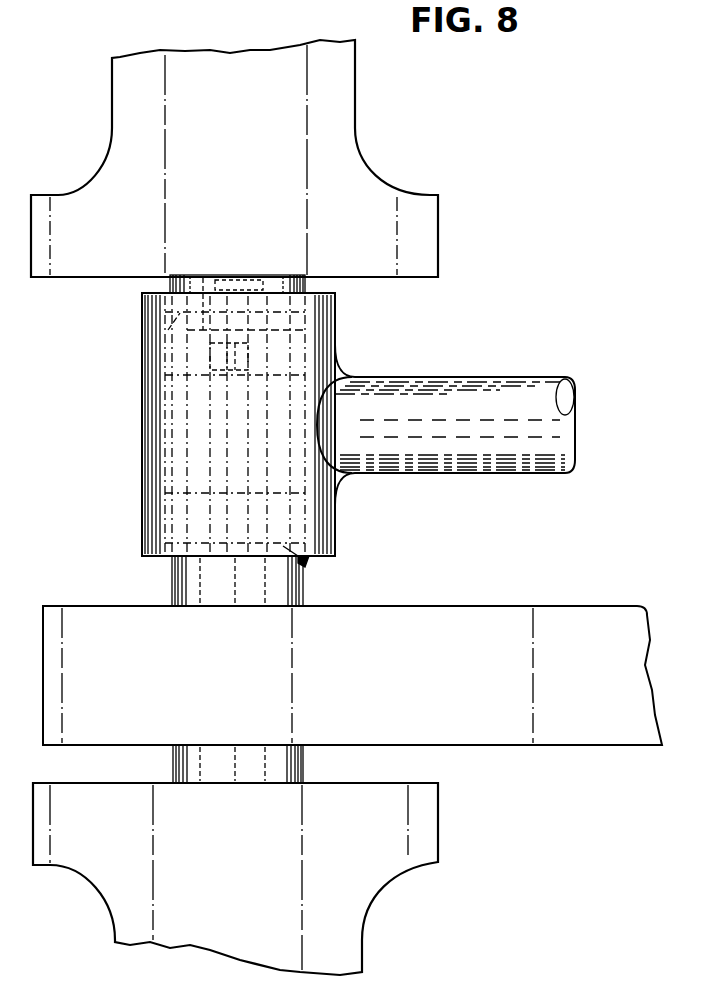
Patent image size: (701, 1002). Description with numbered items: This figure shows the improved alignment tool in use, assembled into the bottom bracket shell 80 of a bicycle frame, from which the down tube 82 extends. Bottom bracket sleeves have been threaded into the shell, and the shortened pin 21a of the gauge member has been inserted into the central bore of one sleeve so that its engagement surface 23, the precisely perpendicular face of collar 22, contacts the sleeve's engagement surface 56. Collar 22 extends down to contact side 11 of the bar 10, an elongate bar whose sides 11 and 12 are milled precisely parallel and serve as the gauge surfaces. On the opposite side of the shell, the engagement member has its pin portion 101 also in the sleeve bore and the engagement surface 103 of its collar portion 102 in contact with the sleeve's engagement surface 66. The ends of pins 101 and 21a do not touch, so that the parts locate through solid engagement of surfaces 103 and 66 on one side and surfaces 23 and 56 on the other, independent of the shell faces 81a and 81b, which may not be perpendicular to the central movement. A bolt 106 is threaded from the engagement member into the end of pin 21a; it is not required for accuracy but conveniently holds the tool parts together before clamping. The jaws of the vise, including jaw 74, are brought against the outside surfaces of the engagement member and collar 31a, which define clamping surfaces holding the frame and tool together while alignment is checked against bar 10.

The bar 10 is at (432, 692).
The side of bar 11 is at (524, 604).
The side of bar 12 is at (500, 746).
The pin 21a is at (210, 462).
The collar 22 is at (295, 590).
The engagement surface 23 is at (299, 547).
The collar 31a is at (305, 763).
The engagement surface 56 is at (305, 563).
The engagement surface 66 is at (206, 276).
The vise jaw 74 is at (438, 850).
The bottom bracket shell 80 is at (142, 441).
The face of bottom bracket shell 81a is at (156, 558).
The face of bottom bracket shell 81b is at (150, 292).
The down tube 82 is at (498, 376).
The pin portion 101 is at (265, 324).
The collar portion 102 is at (305, 288).
The engagement surface 103 is at (168, 331).
The bolt 106 is at (262, 243).